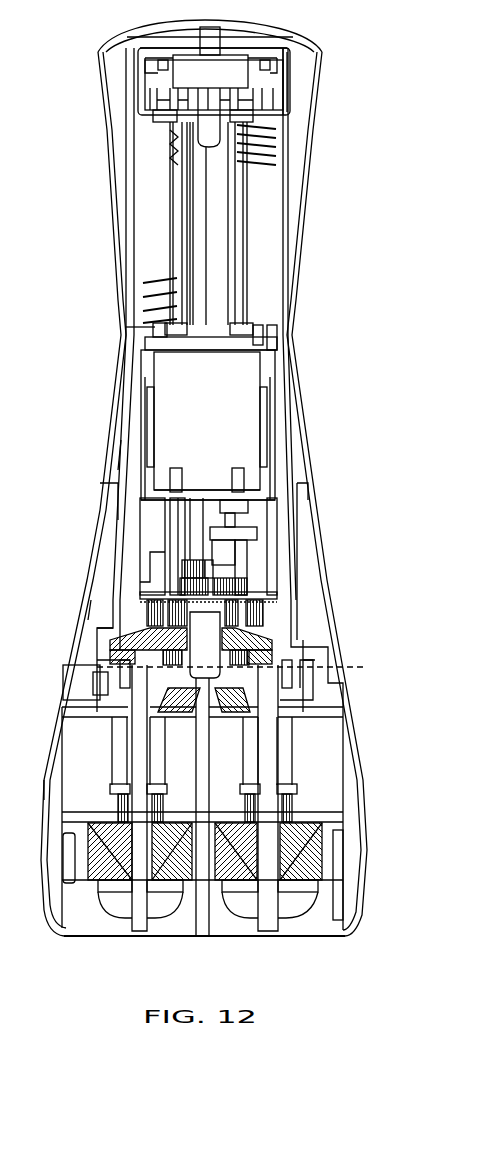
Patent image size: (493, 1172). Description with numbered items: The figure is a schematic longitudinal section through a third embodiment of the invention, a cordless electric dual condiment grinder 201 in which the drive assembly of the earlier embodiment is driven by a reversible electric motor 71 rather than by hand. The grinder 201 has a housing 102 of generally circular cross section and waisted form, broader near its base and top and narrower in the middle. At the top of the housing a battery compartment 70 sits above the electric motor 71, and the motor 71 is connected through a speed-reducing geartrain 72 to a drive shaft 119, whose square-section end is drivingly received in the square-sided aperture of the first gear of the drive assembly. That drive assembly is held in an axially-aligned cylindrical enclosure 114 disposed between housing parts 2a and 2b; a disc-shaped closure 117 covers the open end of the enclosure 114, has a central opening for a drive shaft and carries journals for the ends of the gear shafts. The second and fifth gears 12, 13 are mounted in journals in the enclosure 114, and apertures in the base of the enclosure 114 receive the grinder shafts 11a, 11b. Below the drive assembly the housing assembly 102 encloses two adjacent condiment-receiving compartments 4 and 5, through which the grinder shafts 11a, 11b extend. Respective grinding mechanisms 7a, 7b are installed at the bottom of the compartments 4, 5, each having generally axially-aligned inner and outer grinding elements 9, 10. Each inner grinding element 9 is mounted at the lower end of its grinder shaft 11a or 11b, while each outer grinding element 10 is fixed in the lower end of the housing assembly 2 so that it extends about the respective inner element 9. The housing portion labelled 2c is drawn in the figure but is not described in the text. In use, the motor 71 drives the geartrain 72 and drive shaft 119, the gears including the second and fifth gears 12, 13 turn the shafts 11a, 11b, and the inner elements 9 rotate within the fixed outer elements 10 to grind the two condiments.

The cordless electric dual condiment grinder 201 is at (85, 170).
The battery compartment 70 is at (260, 207).
The housing 102 is at (306, 420).
The housing part 2a is at (60, 459).
The housing assembly 2 is at (0, 521).
The speed-reducing geartrain 72 is at (250, 568).
The closure 117 is at (118, 645).
The drive shaft 119 is at (272, 601).
The housing part 2b is at (45, 613).
The second gear 12 is at (118, 677).
The fifth gear 13 is at (283, 683).
The cylindrical enclosure 114 is at (83, 693).
The condiment-receiving compartment 4 is at (117, 769).
The grinder shaft 11a is at (142, 731).
The grinder shaft 11b is at (270, 735).
The condiment-receiving compartment 5 is at (279, 769).
The housing portion 2c is at (23, 790).
The outer grinding element 10 is at (97, 845).
The inner grinding element 9 is at (97, 875).
The grinding mechanism 7a is at (90, 893).
The grinding mechanism 7b is at (317, 892).
The electric motor 71 is at (209, 418).